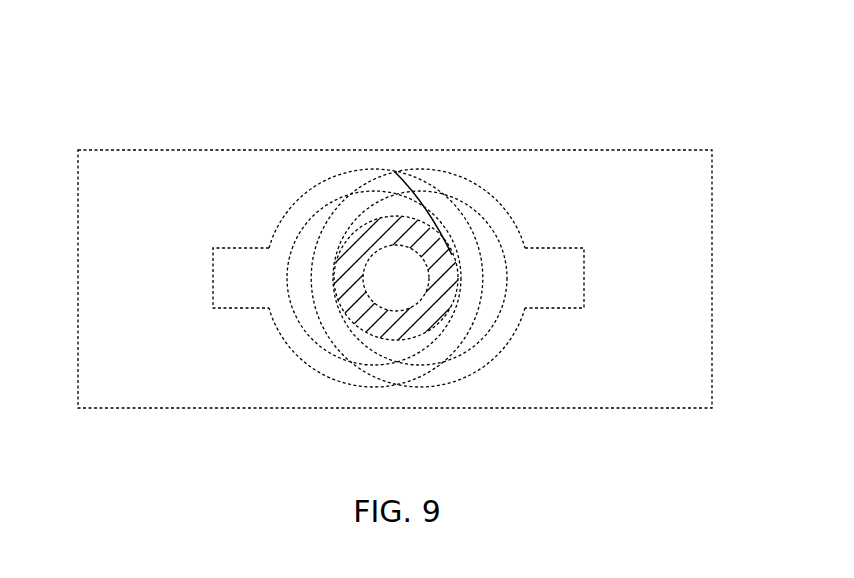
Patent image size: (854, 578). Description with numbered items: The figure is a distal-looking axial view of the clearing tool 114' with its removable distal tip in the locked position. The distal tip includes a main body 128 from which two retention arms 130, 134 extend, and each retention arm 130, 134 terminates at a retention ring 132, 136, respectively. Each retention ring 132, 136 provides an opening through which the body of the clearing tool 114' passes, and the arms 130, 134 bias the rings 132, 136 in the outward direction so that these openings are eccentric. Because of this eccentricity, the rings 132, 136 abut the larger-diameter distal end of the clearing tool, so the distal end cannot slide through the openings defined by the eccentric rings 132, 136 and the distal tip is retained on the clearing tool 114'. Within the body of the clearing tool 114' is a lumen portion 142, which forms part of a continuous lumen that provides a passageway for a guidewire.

The main body 128 is at (120, 172).
The retention arm 130 is at (240, 272).
The retention ring 132 is at (315, 203).
The retention arm 134 is at (560, 268).
The retention ring 136 is at (500, 218).
The clearing tool 114' is at (353, 333).
The lumen portion 142 is at (390, 318).